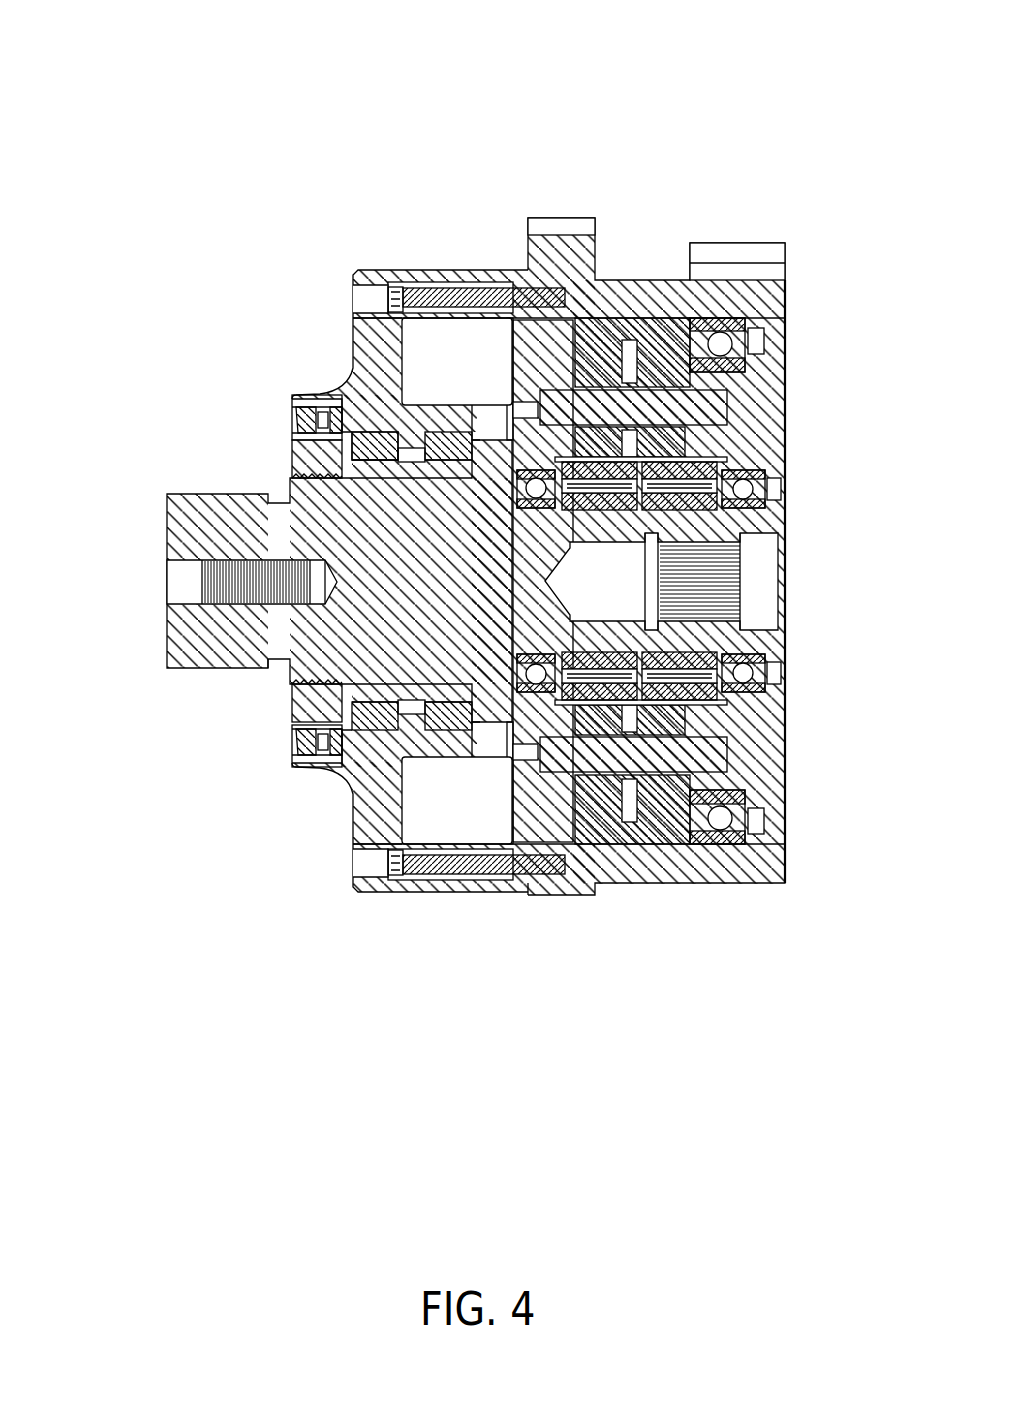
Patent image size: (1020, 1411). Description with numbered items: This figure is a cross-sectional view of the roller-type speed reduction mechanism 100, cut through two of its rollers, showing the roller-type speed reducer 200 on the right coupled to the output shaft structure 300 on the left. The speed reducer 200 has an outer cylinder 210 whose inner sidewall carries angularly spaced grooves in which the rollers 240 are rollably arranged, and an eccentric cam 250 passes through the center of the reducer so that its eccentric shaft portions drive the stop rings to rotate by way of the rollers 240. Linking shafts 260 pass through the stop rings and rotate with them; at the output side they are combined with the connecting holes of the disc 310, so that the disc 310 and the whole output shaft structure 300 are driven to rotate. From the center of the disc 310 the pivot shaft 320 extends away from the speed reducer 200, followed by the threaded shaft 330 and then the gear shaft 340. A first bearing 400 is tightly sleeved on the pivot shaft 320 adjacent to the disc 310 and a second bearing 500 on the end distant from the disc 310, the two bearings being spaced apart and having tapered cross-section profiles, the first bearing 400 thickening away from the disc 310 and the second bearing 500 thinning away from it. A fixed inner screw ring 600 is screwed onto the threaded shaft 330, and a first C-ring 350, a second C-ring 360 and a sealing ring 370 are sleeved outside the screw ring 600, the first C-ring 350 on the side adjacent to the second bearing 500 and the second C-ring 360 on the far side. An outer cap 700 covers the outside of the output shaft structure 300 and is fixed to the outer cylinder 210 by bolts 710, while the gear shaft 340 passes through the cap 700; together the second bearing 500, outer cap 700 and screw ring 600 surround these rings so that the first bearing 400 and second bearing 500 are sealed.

The roller-type speed reduction mechanism 100 is at (309, 214).
The roller-type speed reducer 200 is at (742, 112).
The outer cylinder 210 is at (795, 286).
The rollers 240 is at (634, 312).
The eccentric cam 250 is at (775, 580).
The linking shafts 260 is at (715, 406).
The output shaft structure 300 is at (160, 628).
The disc 310 is at (522, 795).
The pivot shaft 320 is at (355, 790).
The threaded shaft 330 is at (295, 693).
The gear shaft 340 is at (240, 672).
The first C-ring 350 is at (342, 405).
The second C-ring 360 is at (292, 420).
The sealing ring 370 is at (318, 393).
The first bearing 400 is at (450, 425).
The second bearing 500 is at (377, 428).
The fixed inner screw ring 600 is at (285, 457).
The outer cap 700 is at (490, 908).
The bolts 710 is at (443, 874).